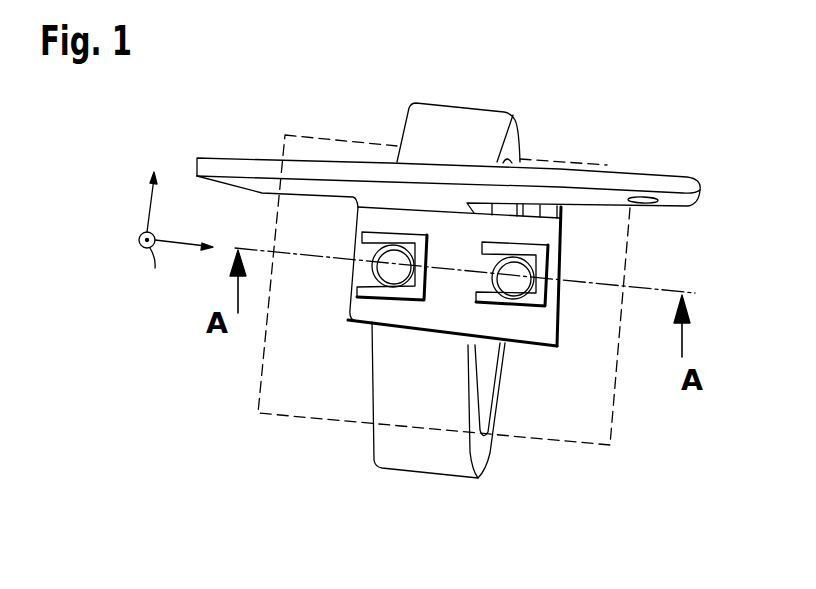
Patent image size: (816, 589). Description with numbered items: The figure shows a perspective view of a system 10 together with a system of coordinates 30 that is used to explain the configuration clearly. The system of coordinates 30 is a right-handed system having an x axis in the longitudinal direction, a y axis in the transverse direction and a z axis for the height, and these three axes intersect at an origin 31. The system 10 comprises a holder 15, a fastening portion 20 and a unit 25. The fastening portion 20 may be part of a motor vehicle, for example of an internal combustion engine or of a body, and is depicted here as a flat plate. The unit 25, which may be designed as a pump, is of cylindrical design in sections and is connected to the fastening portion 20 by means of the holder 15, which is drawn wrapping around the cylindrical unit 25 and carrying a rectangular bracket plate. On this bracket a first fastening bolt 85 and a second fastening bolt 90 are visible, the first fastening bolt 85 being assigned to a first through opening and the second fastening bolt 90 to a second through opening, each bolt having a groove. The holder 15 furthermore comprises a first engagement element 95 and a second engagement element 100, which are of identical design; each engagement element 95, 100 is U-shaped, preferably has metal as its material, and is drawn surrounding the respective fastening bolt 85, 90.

The system 10 is at (653, 97).
The holder 15 is at (377, 480).
The fastening portion 20 is at (550, 233).
The unit 25 is at (587, 450).
The system of coordinates 30 is at (124, 223).
The origin 31 is at (128, 232).
The first fastening bolt 85 is at (392, 253).
The second fastening bolt 90 is at (513, 267).
The first engagement element 95 is at (412, 290).
The second engagement element 100 is at (540, 302).